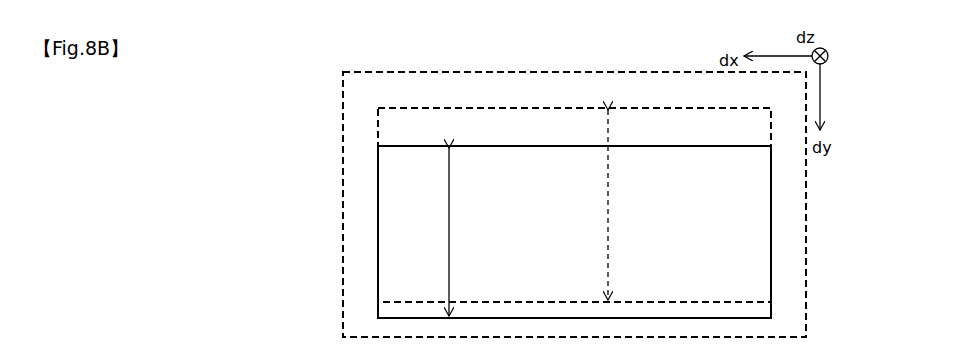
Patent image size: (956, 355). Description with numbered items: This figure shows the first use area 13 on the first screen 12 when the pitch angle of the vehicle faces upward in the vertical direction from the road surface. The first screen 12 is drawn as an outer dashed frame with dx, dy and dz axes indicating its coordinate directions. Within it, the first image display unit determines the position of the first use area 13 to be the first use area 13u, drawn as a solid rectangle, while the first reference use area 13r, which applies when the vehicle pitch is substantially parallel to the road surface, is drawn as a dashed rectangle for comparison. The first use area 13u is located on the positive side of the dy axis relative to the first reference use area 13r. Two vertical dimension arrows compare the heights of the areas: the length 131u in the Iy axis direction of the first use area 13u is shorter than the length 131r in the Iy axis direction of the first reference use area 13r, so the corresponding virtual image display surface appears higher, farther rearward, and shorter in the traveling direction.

The first screen 12 is at (348, 71).
The first use area 13 is at (574, 180).
The first use area (upward pitch) 13u is at (500, 146).
The first reference use area 13r is at (703, 108).
The length of first reference use area in Iy axis direction 131r is at (605, 178).
The length of first use area in Iy axis direction 131u is at (449, 242).